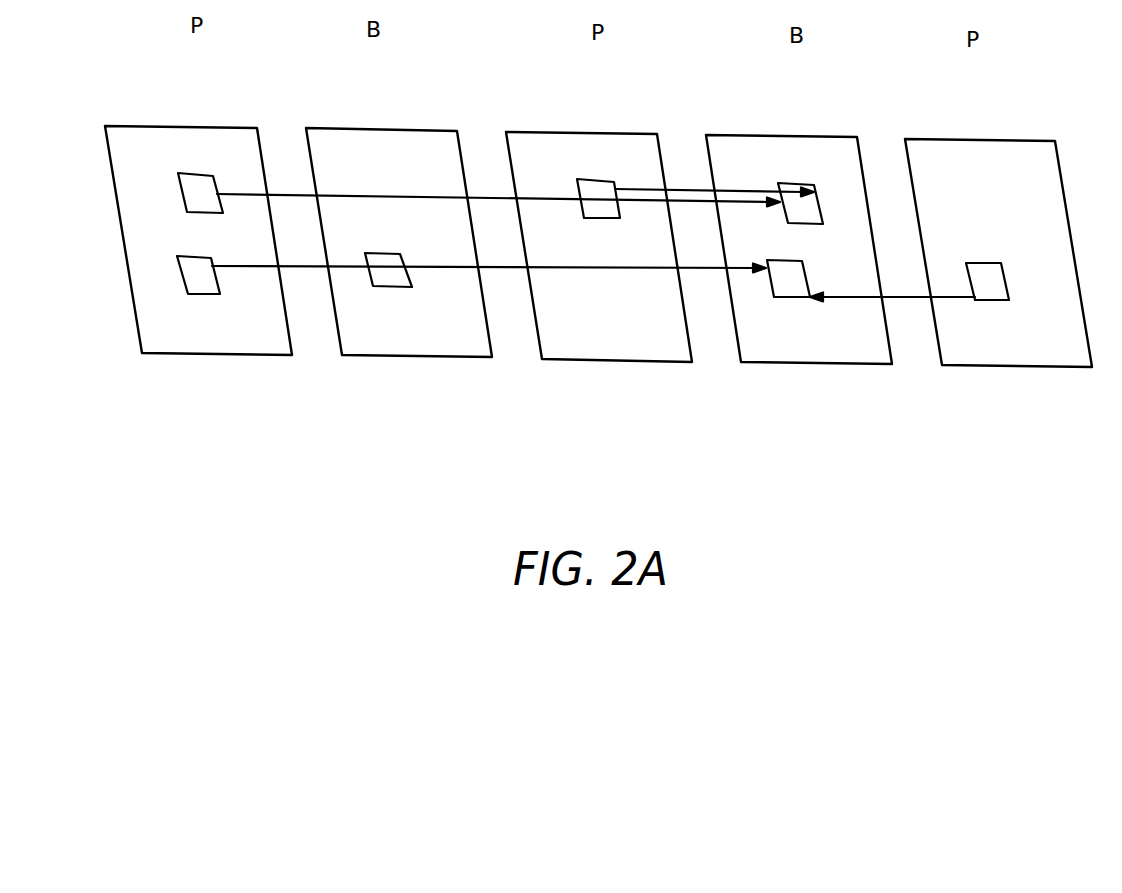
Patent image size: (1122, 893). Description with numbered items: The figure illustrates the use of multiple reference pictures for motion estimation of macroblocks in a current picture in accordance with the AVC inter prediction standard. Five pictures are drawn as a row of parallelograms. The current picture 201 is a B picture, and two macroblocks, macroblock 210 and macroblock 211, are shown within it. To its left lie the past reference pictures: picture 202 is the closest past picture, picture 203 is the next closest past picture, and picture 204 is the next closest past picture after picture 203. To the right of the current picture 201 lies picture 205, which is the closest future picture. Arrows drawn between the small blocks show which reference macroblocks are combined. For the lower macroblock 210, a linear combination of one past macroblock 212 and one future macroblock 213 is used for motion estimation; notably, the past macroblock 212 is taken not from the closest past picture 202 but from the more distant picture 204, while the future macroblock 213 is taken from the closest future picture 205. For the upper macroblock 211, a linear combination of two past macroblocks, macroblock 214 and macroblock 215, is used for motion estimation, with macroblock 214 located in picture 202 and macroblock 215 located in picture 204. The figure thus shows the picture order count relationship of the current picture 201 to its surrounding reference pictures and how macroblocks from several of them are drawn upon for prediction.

The current picture 201 is at (730, 135).
The closest past picture 202 is at (538, 132).
The next closest past picture 203 is at (328, 128).
The next closest past picture after picture 203 204 is at (137, 126).
The closest future picture 205 is at (942, 139).
The macroblock 210 is at (800, 298).
The macroblock 211 is at (797, 182).
The past macroblock 212 is at (198, 295).
The future macroblock 213 is at (998, 300).
The past macroblock 214 is at (602, 177).
The past macroblock 215 is at (193, 173).